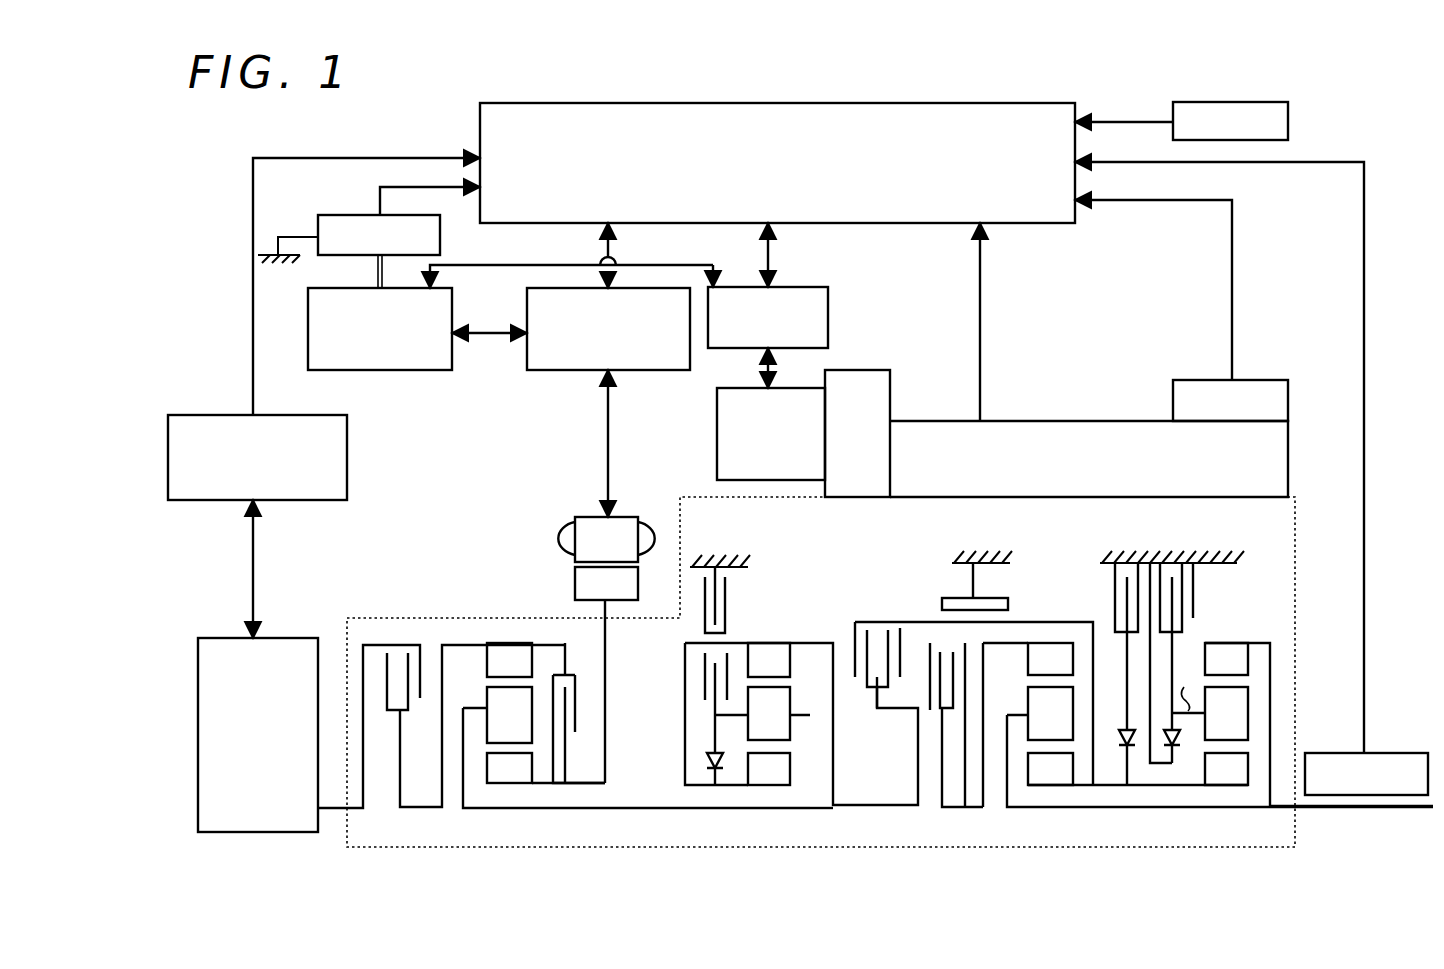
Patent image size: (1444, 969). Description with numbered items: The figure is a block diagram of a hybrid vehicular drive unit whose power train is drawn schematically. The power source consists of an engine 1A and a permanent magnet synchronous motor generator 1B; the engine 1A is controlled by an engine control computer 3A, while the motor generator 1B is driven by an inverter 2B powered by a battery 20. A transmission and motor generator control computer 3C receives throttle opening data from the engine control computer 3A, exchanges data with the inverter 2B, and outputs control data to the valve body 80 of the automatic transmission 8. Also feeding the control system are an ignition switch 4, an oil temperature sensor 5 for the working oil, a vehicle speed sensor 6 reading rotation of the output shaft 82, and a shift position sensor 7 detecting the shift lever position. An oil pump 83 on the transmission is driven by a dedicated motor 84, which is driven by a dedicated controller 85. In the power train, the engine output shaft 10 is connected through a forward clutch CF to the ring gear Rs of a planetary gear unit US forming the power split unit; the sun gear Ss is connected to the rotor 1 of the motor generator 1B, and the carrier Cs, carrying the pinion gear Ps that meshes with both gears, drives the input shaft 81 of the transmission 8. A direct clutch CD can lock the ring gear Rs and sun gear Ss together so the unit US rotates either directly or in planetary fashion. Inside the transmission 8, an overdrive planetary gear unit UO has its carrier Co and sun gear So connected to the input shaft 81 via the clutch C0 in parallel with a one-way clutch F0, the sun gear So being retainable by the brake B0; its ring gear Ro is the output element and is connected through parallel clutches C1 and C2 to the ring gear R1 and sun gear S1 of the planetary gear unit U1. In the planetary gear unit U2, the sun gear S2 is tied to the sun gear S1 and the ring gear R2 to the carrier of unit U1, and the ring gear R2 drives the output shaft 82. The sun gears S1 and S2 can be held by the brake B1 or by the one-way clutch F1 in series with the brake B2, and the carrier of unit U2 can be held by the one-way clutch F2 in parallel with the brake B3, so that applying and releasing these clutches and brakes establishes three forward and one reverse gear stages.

The hybrid drive unit input 1 is at (638, 580).
The engine 1A is at (229, 638).
The motor generator 1B is at (591, 510).
The inverter 2B is at (560, 370).
The engine control computer 3A is at (347, 455).
The transmission and motor generator control computer 3C is at (637, 102).
The ignition switch 4 is at (440, 236).
The oil temperature sensor 5 is at (1290, 392).
The vehicle speed sensor 6 is at (1410, 754).
The shift position sensor 7 is at (1290, 118).
The automatic transmission 8 is at (1295, 560).
The output shaft of the engine 10 is at (325, 812).
The battery 20 is at (425, 370).
The valve body 80 is at (1288, 458).
The input shaft 81 is at (658, 808).
The output shaft 82 is at (1315, 808).
The oil pump 83 is at (890, 392).
The motor 84 is at (716, 430).
The controller 85 is at (828, 306).
The forward clutch CF is at (387, 712).
The planetary gear unit US is at (502, 642).
The ring gear Rs is at (517, 659).
The carrier Cs is at (486, 704).
The sun gear Ss is at (507, 775).
The pinion gear Ps is at (532, 720).
The direct clutch CD is at (580, 715).
The brake B0 is at (742, 556).
The one-way clutch F0 is at (708, 772).
The planetary gear unit UO is at (779, 642).
The clutch C0 is at (727, 678).
The ring gear Ro is at (790, 665).
The carrier Co is at (790, 713).
The sun gear So is at (790, 765).
The clutch C2 is at (868, 624).
The brake B1 is at (958, 594).
The clutch C1 is at (965, 690).
The planetary gear unit U1 is at (1050, 642).
The ring gear R1 is at (1026, 664).
The sun gear S1 is at (1046, 785).
The brake B2 is at (1116, 598).
The one-way clutch F1 is at (1122, 750).
The brake B3 is at (1198, 592).
The one-way clutch F2 is at (1174, 750).
The planetary gear unit U2 is at (1231, 643).
The ring gear R2 is at (1245, 643).
The sun gear S2 is at (1248, 767).